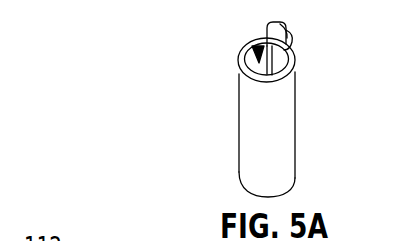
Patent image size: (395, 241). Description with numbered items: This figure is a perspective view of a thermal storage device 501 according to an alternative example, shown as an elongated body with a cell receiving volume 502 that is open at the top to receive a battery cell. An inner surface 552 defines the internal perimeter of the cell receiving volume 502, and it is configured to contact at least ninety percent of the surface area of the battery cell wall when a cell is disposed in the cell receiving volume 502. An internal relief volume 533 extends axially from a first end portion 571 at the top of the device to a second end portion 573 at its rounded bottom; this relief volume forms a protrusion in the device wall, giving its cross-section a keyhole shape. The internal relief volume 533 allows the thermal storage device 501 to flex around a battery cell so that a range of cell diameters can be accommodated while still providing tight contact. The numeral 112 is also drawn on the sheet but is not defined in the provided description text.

The sensor assembly 112 is at (114, 32).
The thermal storage device 501 is at (253, 128).
The cell receiving volume 502 is at (257, 46).
The internal relief volume 533 is at (284, 26).
The inner surface 552 is at (292, 50).
The first end portion 571 is at (293, 66).
The second end portion 573 is at (297, 188).